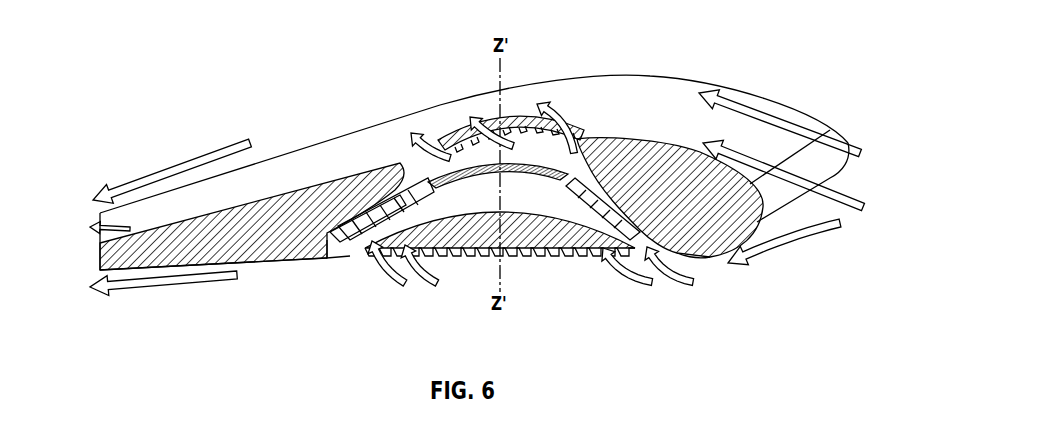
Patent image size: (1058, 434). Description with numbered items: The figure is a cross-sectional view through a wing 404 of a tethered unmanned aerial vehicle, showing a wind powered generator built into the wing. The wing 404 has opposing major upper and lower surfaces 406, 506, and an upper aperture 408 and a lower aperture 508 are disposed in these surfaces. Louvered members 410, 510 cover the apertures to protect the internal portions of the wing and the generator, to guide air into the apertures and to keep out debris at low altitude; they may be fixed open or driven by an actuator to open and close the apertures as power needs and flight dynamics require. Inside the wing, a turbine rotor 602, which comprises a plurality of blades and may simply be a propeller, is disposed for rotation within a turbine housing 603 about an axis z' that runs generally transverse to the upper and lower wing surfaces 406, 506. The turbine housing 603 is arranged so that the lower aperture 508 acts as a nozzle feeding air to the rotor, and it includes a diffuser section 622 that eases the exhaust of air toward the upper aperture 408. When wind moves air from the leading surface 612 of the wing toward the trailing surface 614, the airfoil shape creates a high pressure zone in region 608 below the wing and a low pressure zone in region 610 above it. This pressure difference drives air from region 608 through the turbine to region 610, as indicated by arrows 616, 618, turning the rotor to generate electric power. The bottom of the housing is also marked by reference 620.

The wing 404 is at (688, 83).
The upper surface 406 is at (343, 147).
The upper aperture 408 is at (433, 128).
The louvered member 410 is at (521, 128).
The lower surface 506 is at (710, 258).
The lower aperture 508 is at (344, 275).
The louvered member 510 is at (468, 258).
The turbine rotor 602 is at (600, 146).
The turbine housing 603 is at (334, 233).
The high pressure zone region 608 is at (576, 290).
The low pressure zone region 610 is at (481, 78).
The leading surface 612 is at (777, 193).
The trailing surface 614 is at (98, 229).
The arrows 616 is at (680, 275).
The arrows 618 is at (475, 117).
The bottom surface of base 620 is at (283, 261).
The diffuser section 622 is at (403, 178).